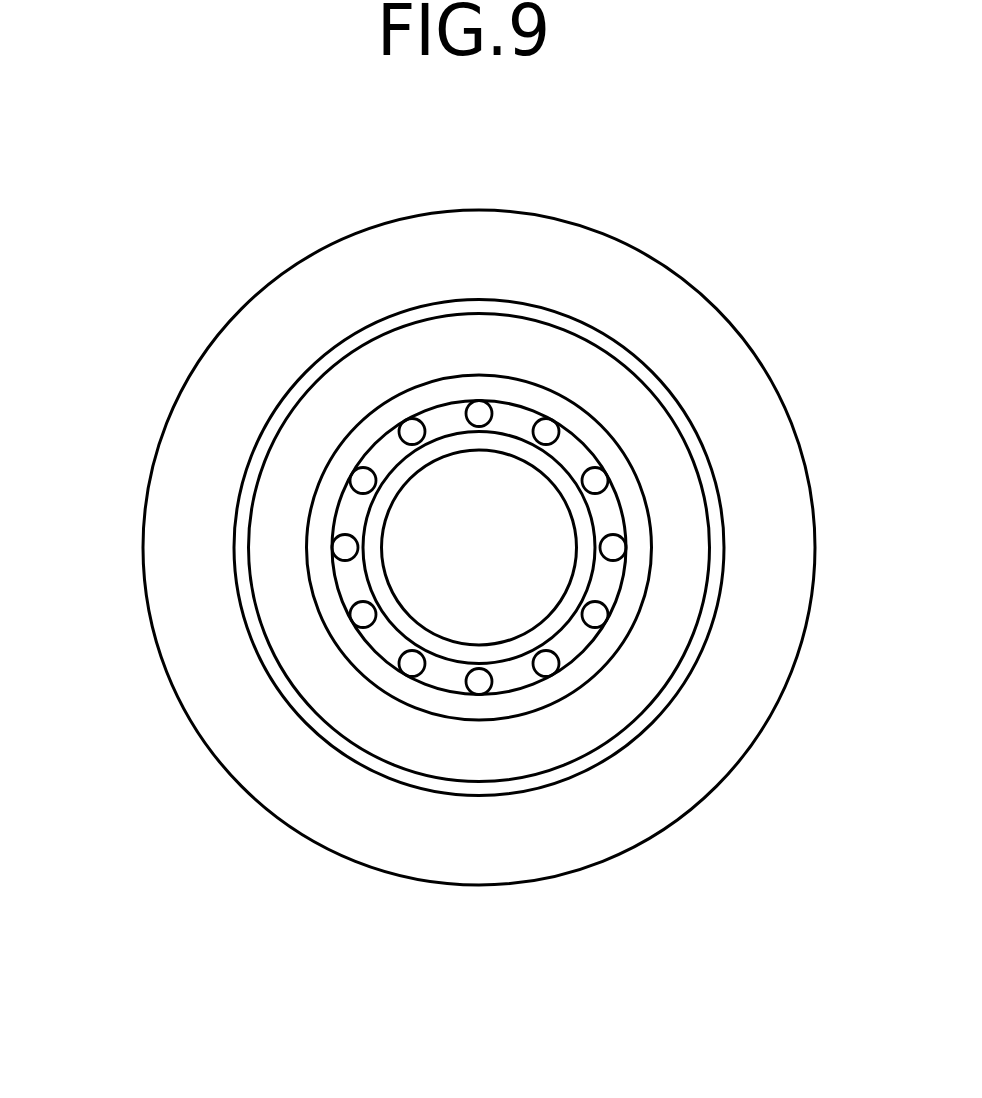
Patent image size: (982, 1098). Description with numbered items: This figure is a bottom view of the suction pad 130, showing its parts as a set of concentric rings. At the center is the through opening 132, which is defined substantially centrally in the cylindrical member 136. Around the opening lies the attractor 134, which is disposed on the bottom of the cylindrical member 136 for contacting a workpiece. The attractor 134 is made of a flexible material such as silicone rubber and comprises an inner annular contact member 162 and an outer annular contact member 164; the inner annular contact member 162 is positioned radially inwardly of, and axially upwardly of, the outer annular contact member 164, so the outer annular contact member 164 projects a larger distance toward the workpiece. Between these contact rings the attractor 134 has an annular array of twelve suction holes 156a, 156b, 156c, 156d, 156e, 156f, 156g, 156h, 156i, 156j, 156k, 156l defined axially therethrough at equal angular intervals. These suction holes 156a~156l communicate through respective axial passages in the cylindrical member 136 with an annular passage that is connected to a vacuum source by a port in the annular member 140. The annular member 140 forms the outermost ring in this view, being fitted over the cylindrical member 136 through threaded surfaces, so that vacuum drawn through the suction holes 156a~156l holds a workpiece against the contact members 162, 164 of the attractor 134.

The suction pad 130 is at (655, 217).
The through opening 132 is at (489, 643).
The attractor 134 is at (530, 377).
The cylindrical member 136 is at (267, 593).
The annular member 140 is at (768, 620).
The inner annular contact member 162 is at (410, 625).
The outer annular contact member 164 is at (600, 438).
The suction hole 156a is at (479, 413).
The suction hole 156b is at (546, 431).
The suction hole 156c is at (595, 480).
The suction hole 156d is at (613, 547).
The suction hole 156e is at (595, 614).
The suction hole 156f is at (546, 663).
The suction hole 156g is at (479, 681).
The suction hole 156h is at (412, 663).
The suction hole 156i is at (363, 614).
The suction hole 156j is at (345, 547).
The suction hole 156k is at (363, 480).
The suction hole 156l is at (412, 431).